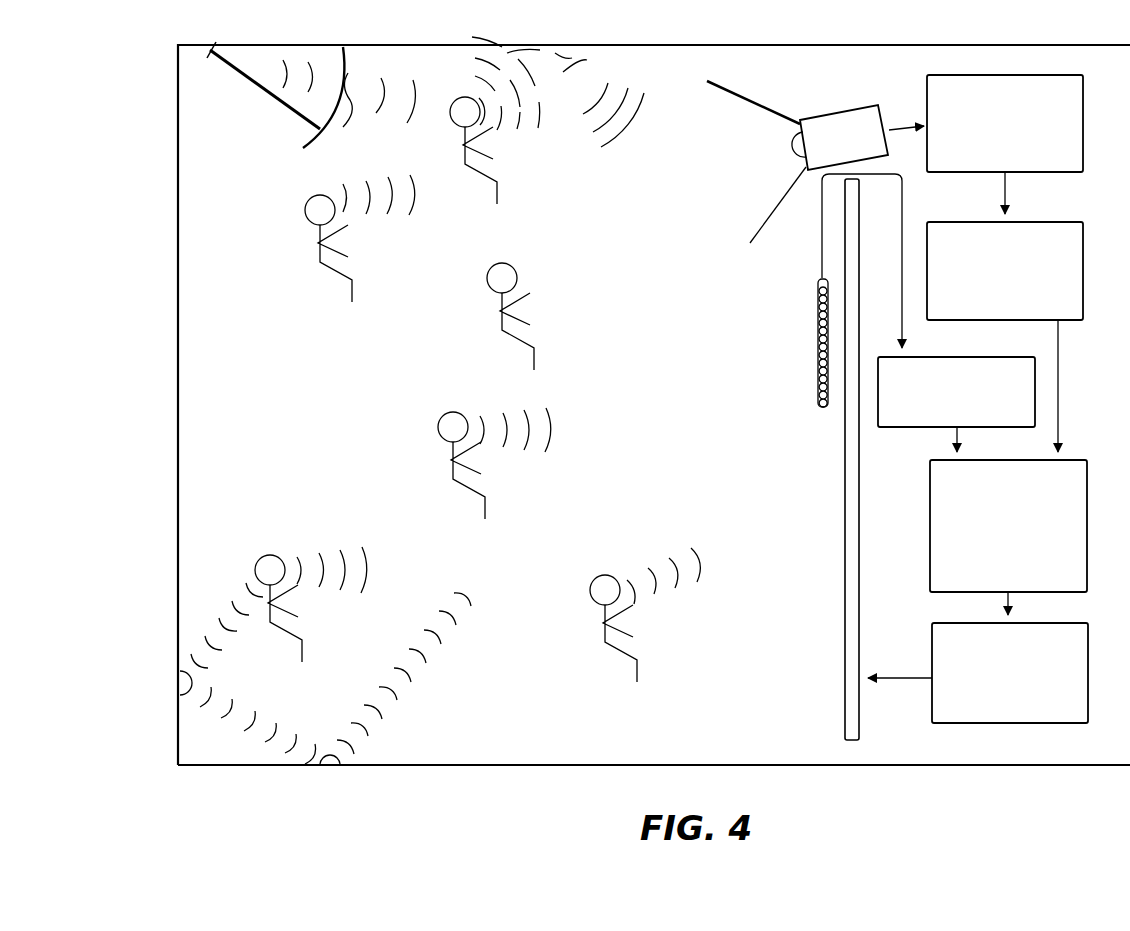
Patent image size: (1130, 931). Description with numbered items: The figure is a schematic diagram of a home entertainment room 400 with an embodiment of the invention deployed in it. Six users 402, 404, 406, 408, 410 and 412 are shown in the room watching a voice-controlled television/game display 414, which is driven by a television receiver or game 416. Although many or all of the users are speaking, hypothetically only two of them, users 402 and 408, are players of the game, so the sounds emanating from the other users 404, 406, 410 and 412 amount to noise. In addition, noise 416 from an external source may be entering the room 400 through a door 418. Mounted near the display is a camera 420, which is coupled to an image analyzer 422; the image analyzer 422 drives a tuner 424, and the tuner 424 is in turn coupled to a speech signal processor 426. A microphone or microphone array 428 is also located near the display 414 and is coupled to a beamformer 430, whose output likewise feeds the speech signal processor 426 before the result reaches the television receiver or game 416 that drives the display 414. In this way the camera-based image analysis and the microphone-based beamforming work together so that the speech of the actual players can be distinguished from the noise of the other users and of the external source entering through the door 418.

The home entertainment room 400 is at (987, 765).
The user 402 is at (317, 244).
The user 404 is at (462, 146).
The user 406 is at (500, 312).
The user 408 is at (450, 461).
The user 410 is at (303, 652).
The user 412 is at (600, 626).
The voice-controlled television/game display 414 is at (845, 612).
The television receiver or game 416 is at (349, 102).
The door 418 is at (262, 91).
The camera 420 is at (815, 162).
The image analyzer 422 is at (1005, 123).
The tuner 424 is at (1005, 271).
The speech signal processor 426 is at (1008, 526).
The microphone array 428 is at (818, 391).
The beamformer 430 is at (956, 392).